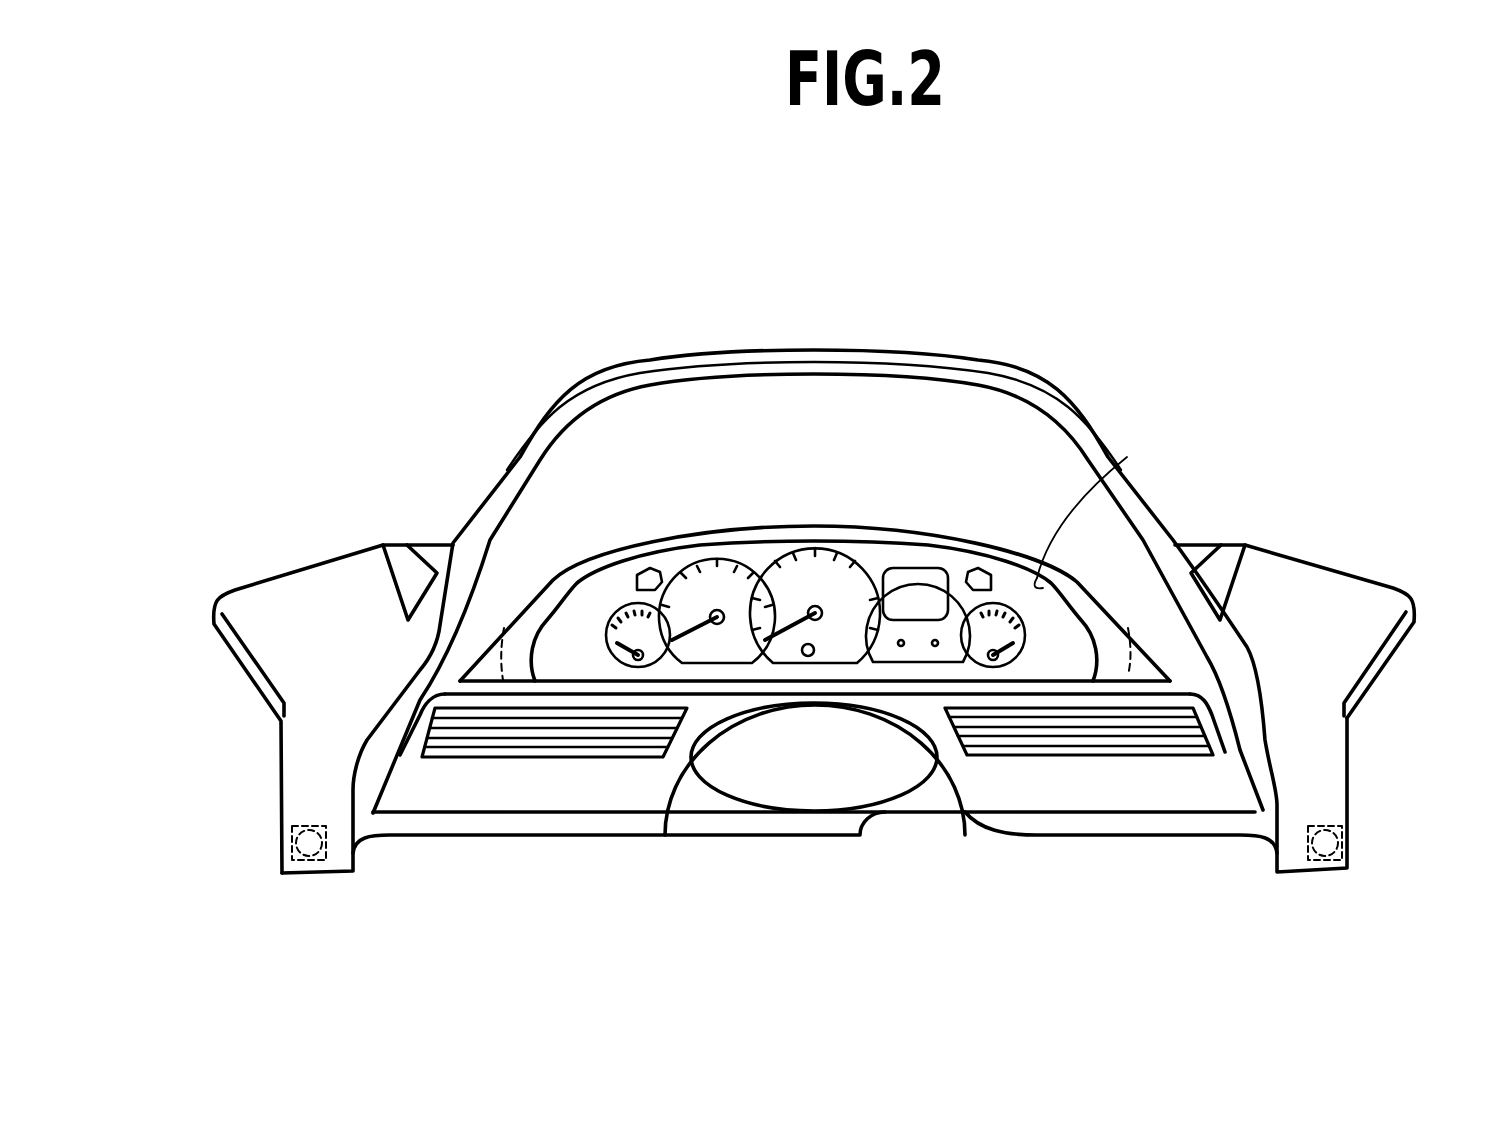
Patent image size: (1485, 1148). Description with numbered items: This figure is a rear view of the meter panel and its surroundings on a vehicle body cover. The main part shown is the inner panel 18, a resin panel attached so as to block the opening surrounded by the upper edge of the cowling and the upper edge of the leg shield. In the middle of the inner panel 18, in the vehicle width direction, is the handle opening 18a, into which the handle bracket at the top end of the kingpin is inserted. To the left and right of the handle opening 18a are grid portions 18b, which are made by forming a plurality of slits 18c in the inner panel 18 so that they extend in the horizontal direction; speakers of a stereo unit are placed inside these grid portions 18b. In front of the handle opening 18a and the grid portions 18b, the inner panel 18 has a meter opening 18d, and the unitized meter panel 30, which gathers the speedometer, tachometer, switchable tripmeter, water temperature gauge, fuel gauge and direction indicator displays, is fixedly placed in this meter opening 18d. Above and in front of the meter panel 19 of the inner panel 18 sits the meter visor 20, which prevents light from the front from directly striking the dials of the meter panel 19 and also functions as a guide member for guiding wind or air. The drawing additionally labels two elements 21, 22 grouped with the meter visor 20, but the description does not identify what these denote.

The inner panel 18 is at (302, 761).
The handle opening 18a is at (732, 797).
The grid portions 18b is at (487, 712).
The slits 18c is at (565, 740).
The meter opening 18d is at (1127, 457).
The meter panel 19 is at (893, 527).
The meter visor 20 is at (814, 346).
The windshield glass 21 is at (898, 397).
The windshield molding 22 is at (846, 348).
The meter panel 30 is at (773, 530).